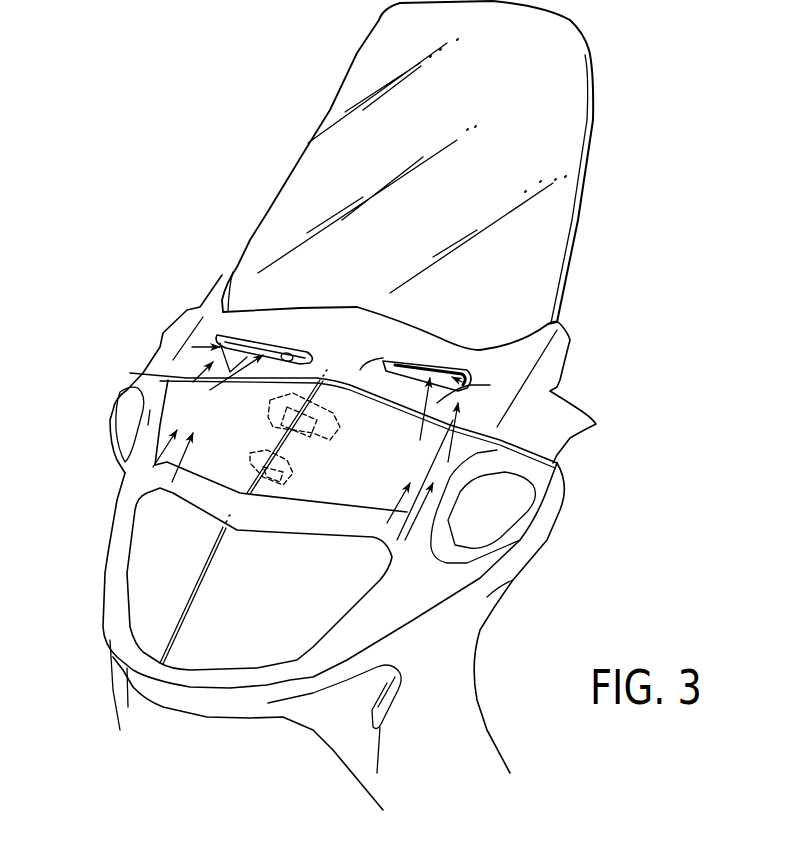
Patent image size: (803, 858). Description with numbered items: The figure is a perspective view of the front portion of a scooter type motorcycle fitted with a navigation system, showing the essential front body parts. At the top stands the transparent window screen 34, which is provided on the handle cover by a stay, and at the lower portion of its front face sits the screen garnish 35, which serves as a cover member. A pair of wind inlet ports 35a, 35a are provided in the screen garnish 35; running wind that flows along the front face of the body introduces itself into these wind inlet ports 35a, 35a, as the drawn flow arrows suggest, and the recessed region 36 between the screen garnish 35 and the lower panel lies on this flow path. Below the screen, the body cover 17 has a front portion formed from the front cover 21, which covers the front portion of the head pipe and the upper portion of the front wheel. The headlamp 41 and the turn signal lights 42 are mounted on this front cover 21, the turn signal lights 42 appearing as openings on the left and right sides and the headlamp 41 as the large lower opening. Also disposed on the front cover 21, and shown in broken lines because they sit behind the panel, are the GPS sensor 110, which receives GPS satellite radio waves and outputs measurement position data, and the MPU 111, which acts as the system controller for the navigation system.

The body cover 17 is at (218, 724).
The front cover 21 is at (513, 580).
The window screen 34 is at (560, 143).
The screen garnish 35 is at (570, 340).
The wind inlet ports 35a is at (307, 363).
The air intake recess 36 is at (206, 478).
The headlamp 41 is at (107, 583).
The turn signal lights 42 is at (117, 405).
The GPS sensor 110 is at (300, 472).
The MPU 111 is at (340, 432).